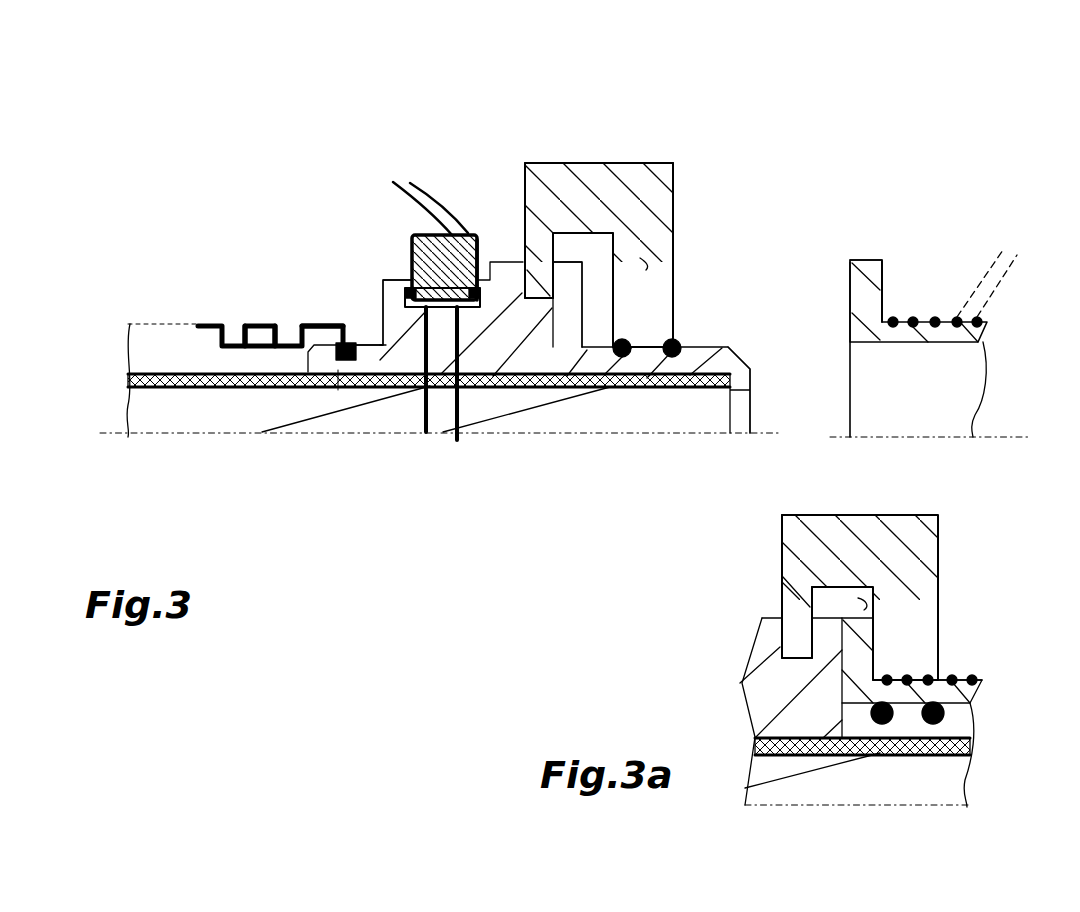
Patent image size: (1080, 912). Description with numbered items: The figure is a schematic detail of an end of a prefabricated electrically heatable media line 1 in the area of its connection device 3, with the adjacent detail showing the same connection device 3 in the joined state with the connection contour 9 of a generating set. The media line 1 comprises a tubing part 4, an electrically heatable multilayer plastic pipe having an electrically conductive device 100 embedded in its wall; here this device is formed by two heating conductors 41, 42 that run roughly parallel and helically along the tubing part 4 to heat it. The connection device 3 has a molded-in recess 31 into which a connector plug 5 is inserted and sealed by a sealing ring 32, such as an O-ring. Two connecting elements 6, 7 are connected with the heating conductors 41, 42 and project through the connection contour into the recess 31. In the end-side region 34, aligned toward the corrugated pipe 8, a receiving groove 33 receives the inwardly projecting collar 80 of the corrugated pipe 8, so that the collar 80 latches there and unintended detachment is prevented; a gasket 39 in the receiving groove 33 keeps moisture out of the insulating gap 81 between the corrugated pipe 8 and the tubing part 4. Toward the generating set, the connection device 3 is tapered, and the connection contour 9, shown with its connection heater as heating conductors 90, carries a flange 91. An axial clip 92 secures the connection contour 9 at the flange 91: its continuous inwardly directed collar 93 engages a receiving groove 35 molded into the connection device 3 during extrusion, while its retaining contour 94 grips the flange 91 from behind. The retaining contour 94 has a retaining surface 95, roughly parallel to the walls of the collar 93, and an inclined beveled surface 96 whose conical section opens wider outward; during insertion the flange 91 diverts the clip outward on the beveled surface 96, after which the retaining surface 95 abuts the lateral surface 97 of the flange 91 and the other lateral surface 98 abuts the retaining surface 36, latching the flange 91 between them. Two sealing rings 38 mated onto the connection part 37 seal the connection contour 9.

In FIG. 3, the media line 1 is at (620, 96).
In FIG. 3, the connection device 3 is at (529, 347).
In FIG. 3A, the connection device 3 is at (760, 658).
In FIG. 3, the tubing part 4 is at (170, 372).
In FIG. 3, the connector plug 5 is at (412, 237).
In FIG. 3, the connecting element 6 is at (426, 432).
In FIG. 3, the connecting element 7 is at (457, 440).
In FIG. 3, the corrugated pipe 8 is at (203, 322).
In FIG. 3, the connection contour 9 is at (906, 250).
In FIG. 3A, the connection contour 9 is at (953, 657).
In FIG. 3, the recess 31 is at (383, 282).
In FIG. 3, the sealing ring 32 is at (479, 289).
In FIG. 3, the receiving groove 33 is at (357, 343).
In FIG. 3, the end-side region 34 is at (336, 398).
In FIG. 3, the receiving groove 35 is at (548, 283).
In FIG. 3A, the receiving groove 35 is at (782, 615).
In FIG. 3, the retaining surface 36 is at (600, 303).
In FIG. 3, the connection part 37 is at (739, 349).
In FIG. 3, the sealing ring 38 is at (628, 340).
In FIG. 3A, the sealing ring 38 is at (943, 717).
In FIG. 3, the gasket 39 is at (352, 344).
In FIG. 3, the heating conductor 41 is at (282, 432).
In FIG. 3, the heating conductor 42 is at (534, 405).
In FIG. 3, the collar 80 is at (322, 325).
In FIG. 3, the insulating gap 81 is at (257, 353).
In FIG. 3, the heating conductors 90 is at (937, 315).
In FIG. 3A, the heating conductors 90 is at (965, 683).
In FIG. 3, the flange 91 is at (853, 292).
In FIG. 3A, the flange 91 is at (860, 660).
In FIG. 3, the axial clip 92 is at (683, 158).
In FIG. 3A, the axial clip 92 is at (949, 531).
In FIG. 3, the collar 93 is at (527, 250).
In FIG. 3A, the collar 93 is at (782, 580).
In FIG. 3, the retaining contour 94 is at (680, 230).
In FIG. 3, the retaining surface 95 is at (648, 262).
In FIG. 3A, the retaining surface 95 is at (867, 603).
In FIG. 3, the beveled surface 96 is at (650, 268).
In FIG. 3, the lateral surface 97 is at (884, 290).
In FIG. 3, the lateral surface 98 is at (850, 315).
In FIG. 3, the electrically conductive device 100 is at (600, 400).
In FIG. 3A, the electrically conductive device 100 is at (882, 767).